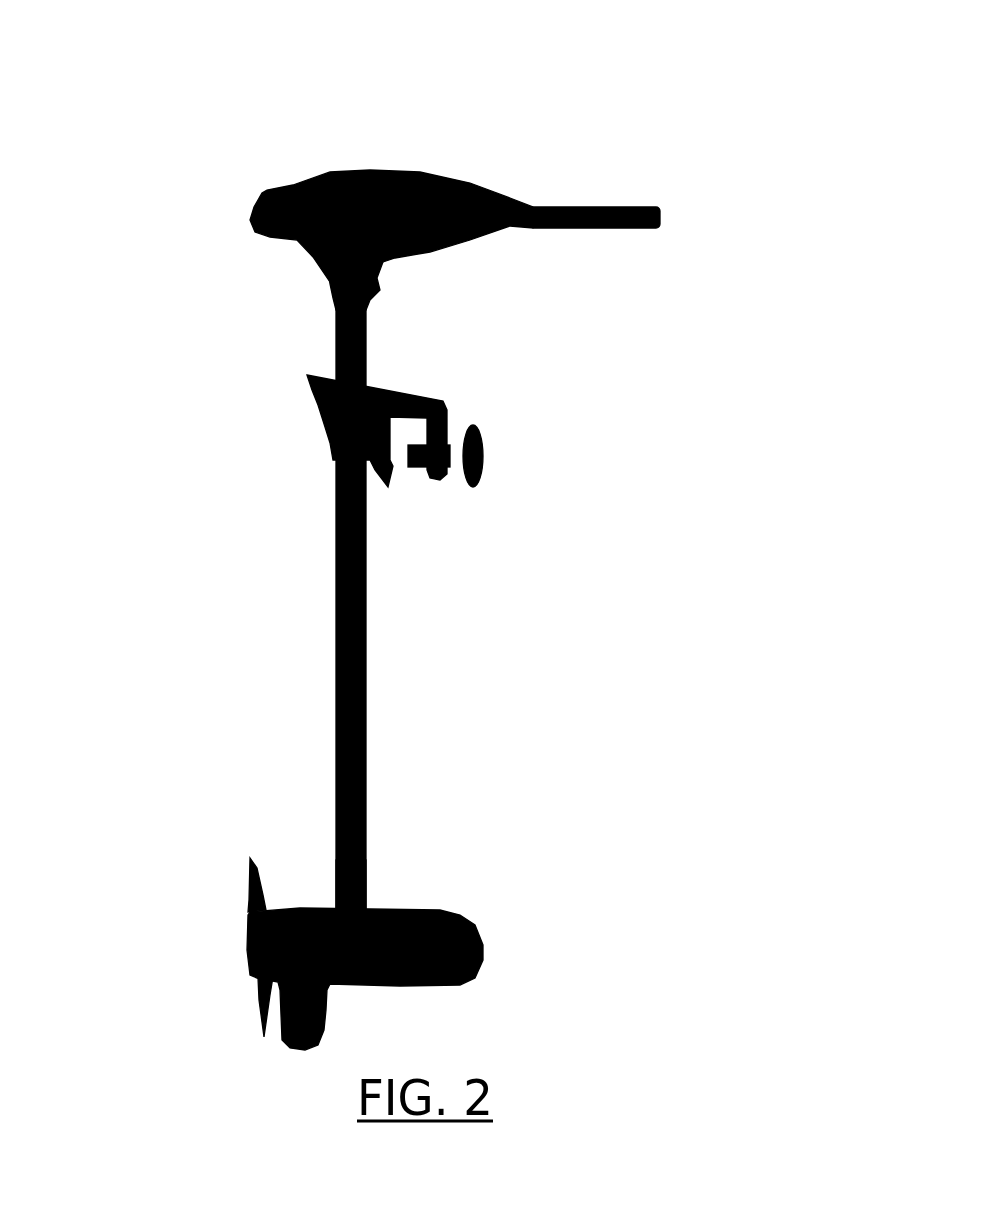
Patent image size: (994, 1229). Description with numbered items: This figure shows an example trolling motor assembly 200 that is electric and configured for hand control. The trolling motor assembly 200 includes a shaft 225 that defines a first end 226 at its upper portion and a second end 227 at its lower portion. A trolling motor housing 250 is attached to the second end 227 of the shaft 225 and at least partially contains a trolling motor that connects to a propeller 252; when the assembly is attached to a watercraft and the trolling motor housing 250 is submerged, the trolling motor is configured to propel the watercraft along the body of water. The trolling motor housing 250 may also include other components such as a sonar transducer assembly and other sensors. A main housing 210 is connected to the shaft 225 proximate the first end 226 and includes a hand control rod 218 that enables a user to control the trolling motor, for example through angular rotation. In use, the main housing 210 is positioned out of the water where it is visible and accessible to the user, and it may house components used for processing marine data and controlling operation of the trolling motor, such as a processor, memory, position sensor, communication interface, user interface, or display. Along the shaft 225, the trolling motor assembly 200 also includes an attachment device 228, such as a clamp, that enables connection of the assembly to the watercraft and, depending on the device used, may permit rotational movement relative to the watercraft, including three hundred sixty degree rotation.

The trolling motor assembly 200 is at (708, 87).
The main housing 210 is at (300, 192).
The hand control rod 218 is at (612, 215).
The shaft 225 is at (345, 598).
The first end 226 is at (323, 301).
The second end 227 is at (364, 885).
The attachment device 228 is at (450, 405).
The trolling motor housing 250 is at (427, 917).
The propeller 252 is at (253, 907).